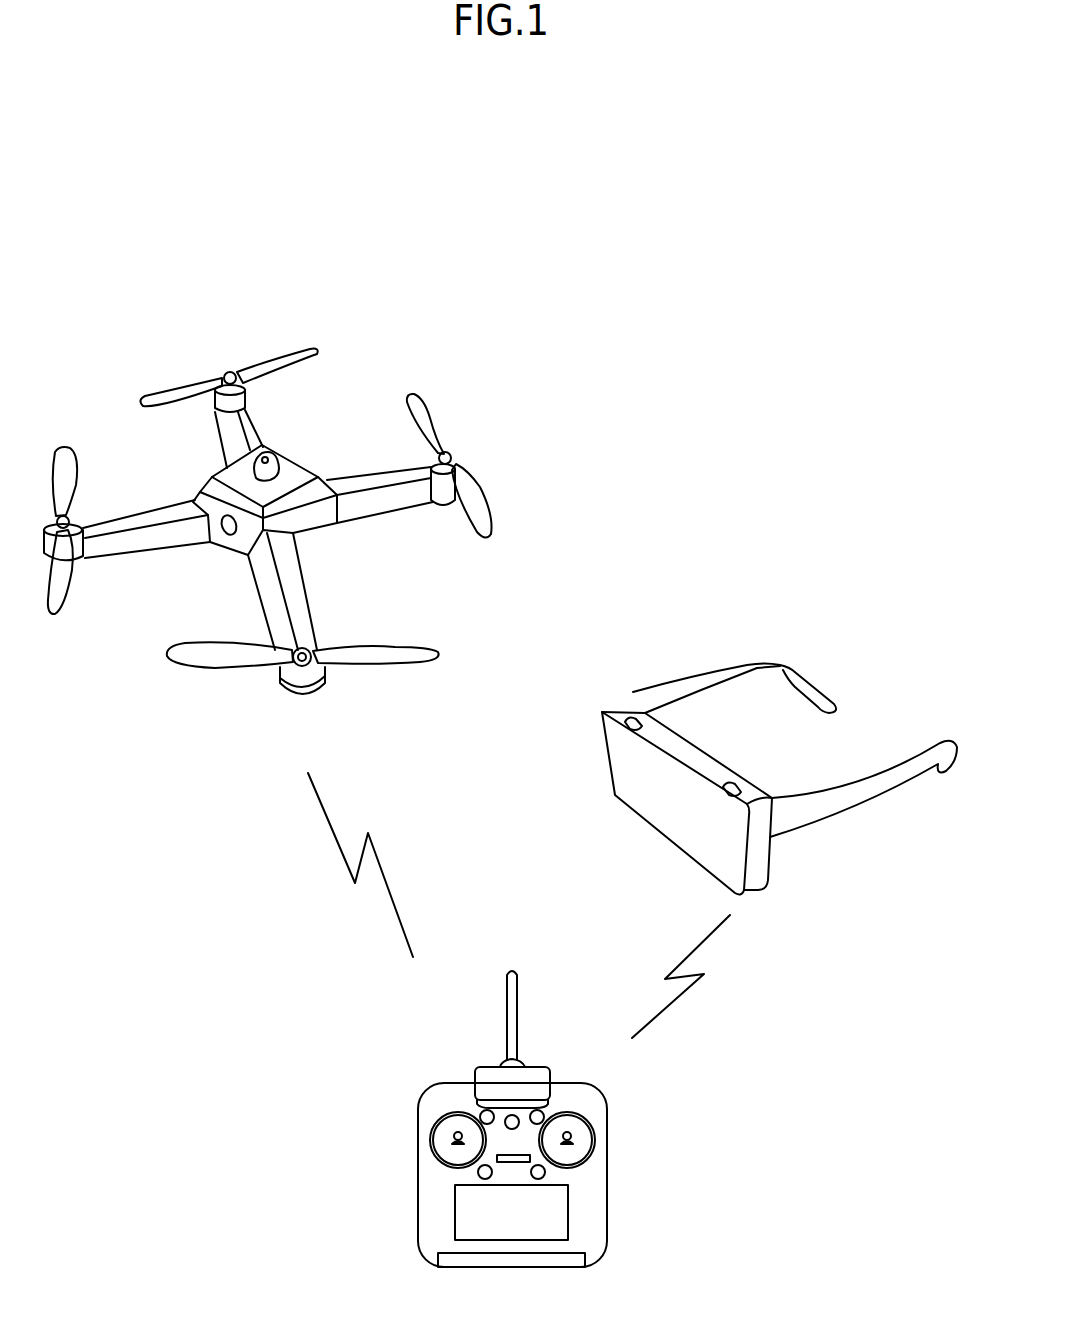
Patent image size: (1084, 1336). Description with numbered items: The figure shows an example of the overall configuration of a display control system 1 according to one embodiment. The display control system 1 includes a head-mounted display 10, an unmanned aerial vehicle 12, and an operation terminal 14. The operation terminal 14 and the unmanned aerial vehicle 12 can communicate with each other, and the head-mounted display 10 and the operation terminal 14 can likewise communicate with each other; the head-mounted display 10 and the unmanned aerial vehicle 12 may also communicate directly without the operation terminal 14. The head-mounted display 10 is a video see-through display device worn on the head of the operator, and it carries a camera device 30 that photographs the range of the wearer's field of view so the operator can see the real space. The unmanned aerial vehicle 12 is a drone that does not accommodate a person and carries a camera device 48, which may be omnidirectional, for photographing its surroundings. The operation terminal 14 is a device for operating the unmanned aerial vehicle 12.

The display control system 1 is at (434, 200).
The head-mounted display 10 is at (772, 872).
The unmanned aerial vehicle 12 is at (428, 418).
The operation terminal 14 is at (603, 1177).
The camera device 30 is at (632, 719).
The camera device 48 is at (275, 467).